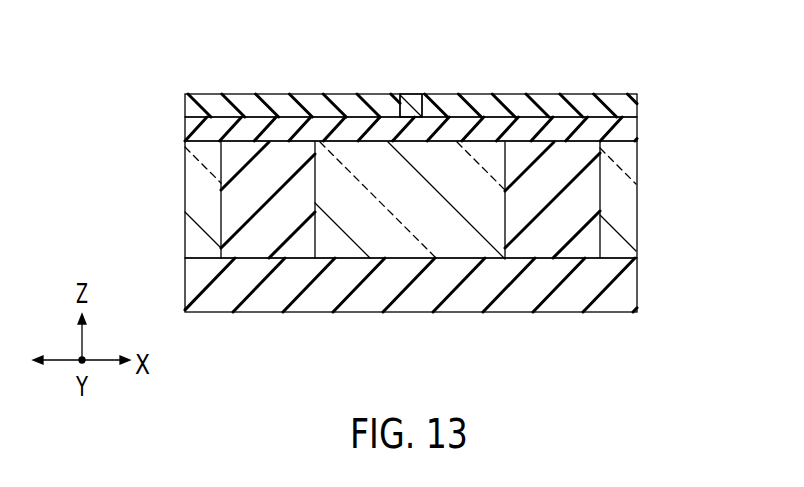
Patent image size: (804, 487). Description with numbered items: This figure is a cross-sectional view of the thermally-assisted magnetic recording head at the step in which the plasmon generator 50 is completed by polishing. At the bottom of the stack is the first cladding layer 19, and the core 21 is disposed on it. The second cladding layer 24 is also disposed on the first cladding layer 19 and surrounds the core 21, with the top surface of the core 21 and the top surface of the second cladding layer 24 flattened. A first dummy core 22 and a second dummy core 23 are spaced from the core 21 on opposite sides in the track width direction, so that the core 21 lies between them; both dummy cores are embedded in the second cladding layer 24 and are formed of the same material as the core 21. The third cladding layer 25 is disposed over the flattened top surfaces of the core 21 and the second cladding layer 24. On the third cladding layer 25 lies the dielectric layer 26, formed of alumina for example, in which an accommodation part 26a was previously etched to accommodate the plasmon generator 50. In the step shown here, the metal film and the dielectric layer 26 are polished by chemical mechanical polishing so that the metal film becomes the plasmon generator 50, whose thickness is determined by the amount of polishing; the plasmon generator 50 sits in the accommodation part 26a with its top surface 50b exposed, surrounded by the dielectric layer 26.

The first cladding layer 19 is at (637, 287).
The core 21 is at (404, 258).
The first dummy core 22 is at (185, 179).
The second dummy core 23 is at (411, 263).
The second cladding layer 24 is at (237, 197).
The third cladding layer 25 is at (637, 133).
The dielectric layer 26 is at (637, 103).
The accommodation part 26a is at (400, 98).
The plasmon generator 50 is at (410, 98).
The top surface 50b is at (423, 97).